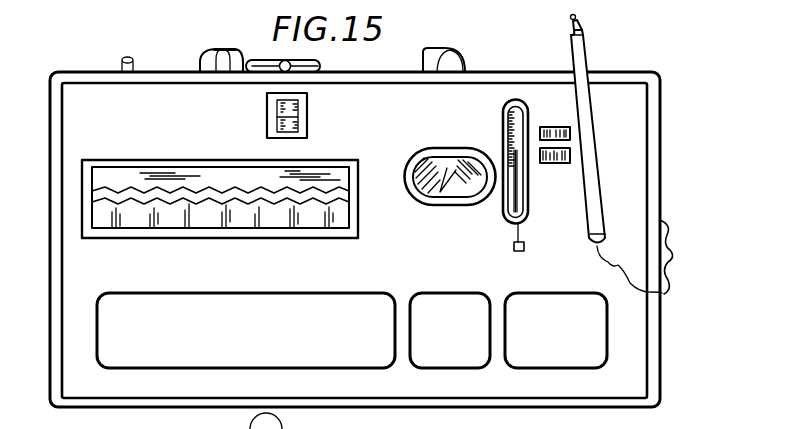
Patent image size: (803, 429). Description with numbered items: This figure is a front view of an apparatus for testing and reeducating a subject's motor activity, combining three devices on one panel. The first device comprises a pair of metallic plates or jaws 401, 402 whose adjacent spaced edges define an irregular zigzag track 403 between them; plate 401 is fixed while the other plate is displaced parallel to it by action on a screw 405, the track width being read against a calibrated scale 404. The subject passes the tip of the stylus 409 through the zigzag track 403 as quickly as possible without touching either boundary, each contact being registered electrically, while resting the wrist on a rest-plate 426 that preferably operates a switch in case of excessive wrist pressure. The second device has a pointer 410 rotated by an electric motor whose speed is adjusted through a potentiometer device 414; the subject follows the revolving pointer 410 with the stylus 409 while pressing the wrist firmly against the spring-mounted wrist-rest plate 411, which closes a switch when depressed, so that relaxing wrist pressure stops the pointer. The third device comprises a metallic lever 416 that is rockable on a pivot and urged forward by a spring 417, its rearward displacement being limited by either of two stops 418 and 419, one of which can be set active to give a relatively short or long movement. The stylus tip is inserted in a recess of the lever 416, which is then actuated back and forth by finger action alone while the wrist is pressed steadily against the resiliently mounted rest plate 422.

The metallic plate 401 is at (213, 218).
The metallic plate 402 is at (220, 196).
The zigzag track 403 is at (170, 198).
The calibrated scale 404 is at (267, 122).
The screw 405 is at (205, 60).
The stylus 409 is at (591, 118).
The pointer 410 is at (447, 180).
The wrist-rest plate 411 is at (433, 307).
The potentiometer device 414 is at (453, 60).
The lever 416 is at (514, 247).
The spring 417 is at (507, 116).
The stop 418 is at (553, 164).
The stop 419 is at (549, 127).
The rest plate 422 is at (565, 357).
The rest-plate 426 is at (148, 318).